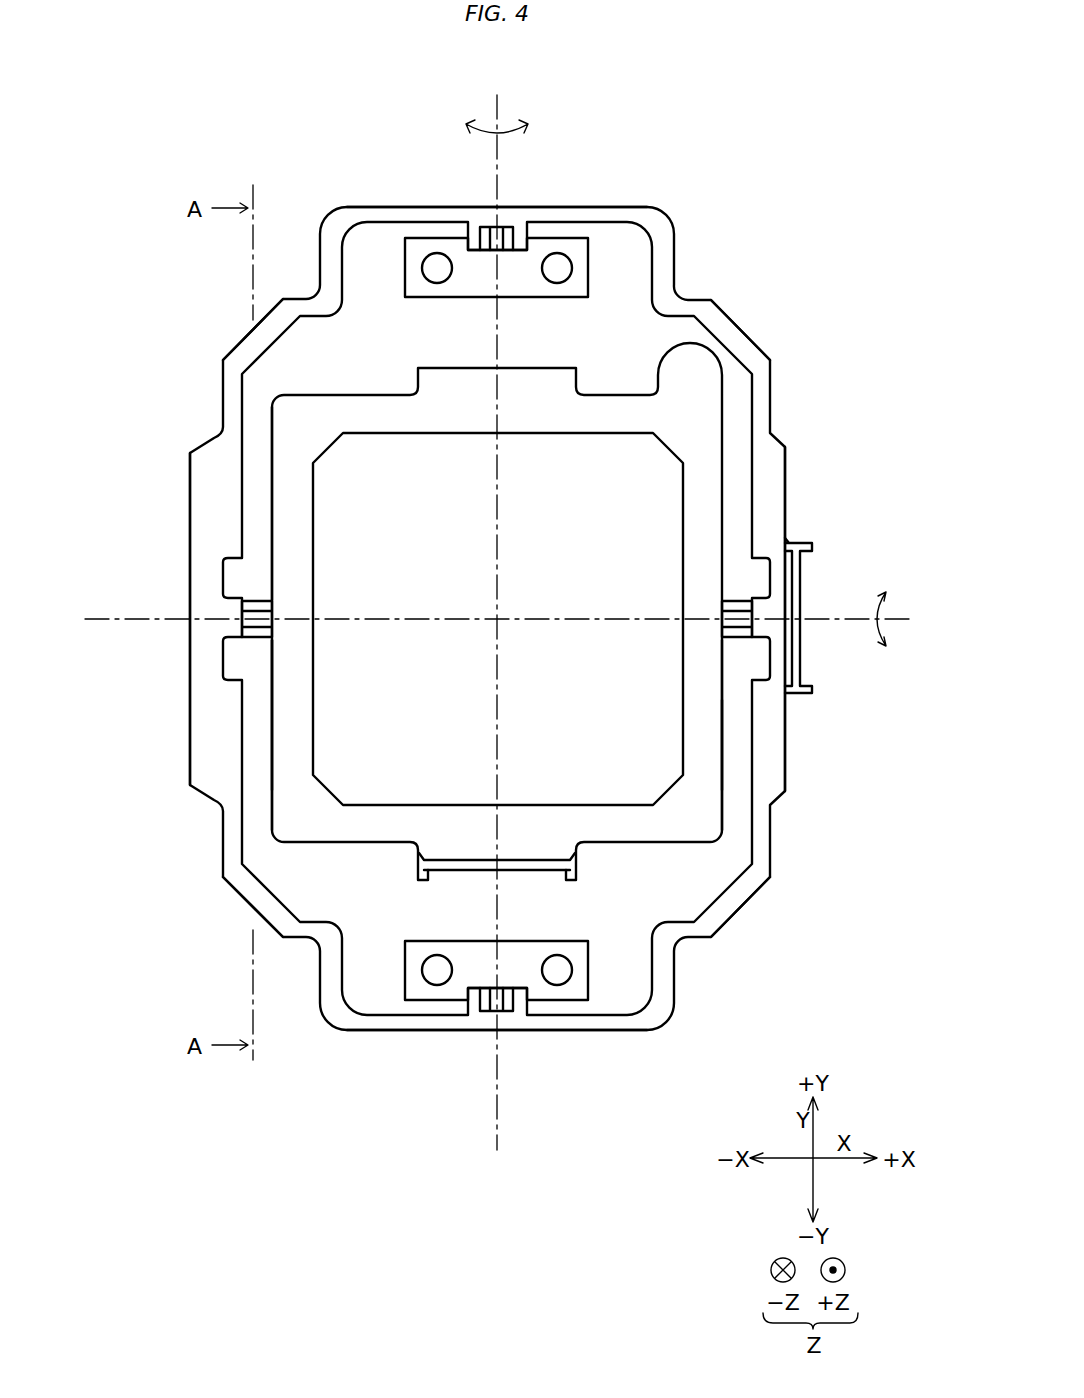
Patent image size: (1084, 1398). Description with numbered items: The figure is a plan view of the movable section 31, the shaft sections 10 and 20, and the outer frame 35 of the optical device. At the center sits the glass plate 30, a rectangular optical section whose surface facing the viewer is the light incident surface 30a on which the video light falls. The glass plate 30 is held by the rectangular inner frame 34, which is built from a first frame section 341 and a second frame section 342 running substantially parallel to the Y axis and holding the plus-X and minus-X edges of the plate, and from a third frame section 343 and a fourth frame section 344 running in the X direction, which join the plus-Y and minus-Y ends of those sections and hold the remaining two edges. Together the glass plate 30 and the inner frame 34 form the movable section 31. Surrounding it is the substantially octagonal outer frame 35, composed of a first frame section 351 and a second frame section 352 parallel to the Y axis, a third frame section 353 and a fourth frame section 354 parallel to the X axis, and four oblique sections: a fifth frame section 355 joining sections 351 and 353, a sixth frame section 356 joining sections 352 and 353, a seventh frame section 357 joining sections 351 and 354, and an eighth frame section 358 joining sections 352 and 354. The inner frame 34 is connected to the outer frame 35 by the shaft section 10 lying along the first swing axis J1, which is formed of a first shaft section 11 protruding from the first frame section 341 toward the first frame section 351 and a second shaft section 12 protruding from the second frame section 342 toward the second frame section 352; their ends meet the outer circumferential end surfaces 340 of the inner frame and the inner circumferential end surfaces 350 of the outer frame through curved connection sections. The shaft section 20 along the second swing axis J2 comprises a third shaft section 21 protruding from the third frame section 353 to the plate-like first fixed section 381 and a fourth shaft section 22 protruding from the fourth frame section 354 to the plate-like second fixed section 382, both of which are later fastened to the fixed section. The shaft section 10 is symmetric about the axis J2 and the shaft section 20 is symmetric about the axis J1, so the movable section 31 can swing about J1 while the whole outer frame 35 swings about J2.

The shaft section 10 is at (479, 570).
The first shaft section 11 is at (732, 600).
The second shaft section 12 is at (250, 600).
The shaft section 20 is at (549, 625).
The third shaft section 21 is at (514, 236).
The fourth shaft section 22 is at (523, 1001).
The glass plate 30 is at (327, 498).
The light incident surface 30a is at (586, 522).
The movable section 31 is at (388, 611).
The inner frame 34 is at (271, 448).
The outer frame 35 is at (221, 396).
The outer circumferential end surfaces 340 is at (723, 703).
The first frame section 341 is at (699, 741).
The second frame section 342 is at (281, 718).
The third frame section 343 is at (385, 410).
The fourth frame section 344 is at (370, 823).
The inner circumferential end surfaces 350 is at (737, 625).
The first frame section 351 is at (766, 776).
The second frame section 352 is at (205, 700).
The third frame section 353 is at (418, 212).
The fourth frame section 354 is at (427, 1023).
The fifth frame section 355 is at (730, 330).
The sixth frame section 356 is at (241, 338).
The seventh frame section 357 is at (740, 895).
The eighth frame section 358 is at (245, 889).
The first fixed section 381 is at (452, 250).
The second fixed section 382 is at (578, 977).
The first swing axis J1 is at (907, 619).
The second swing axis J2 is at (497, 102).